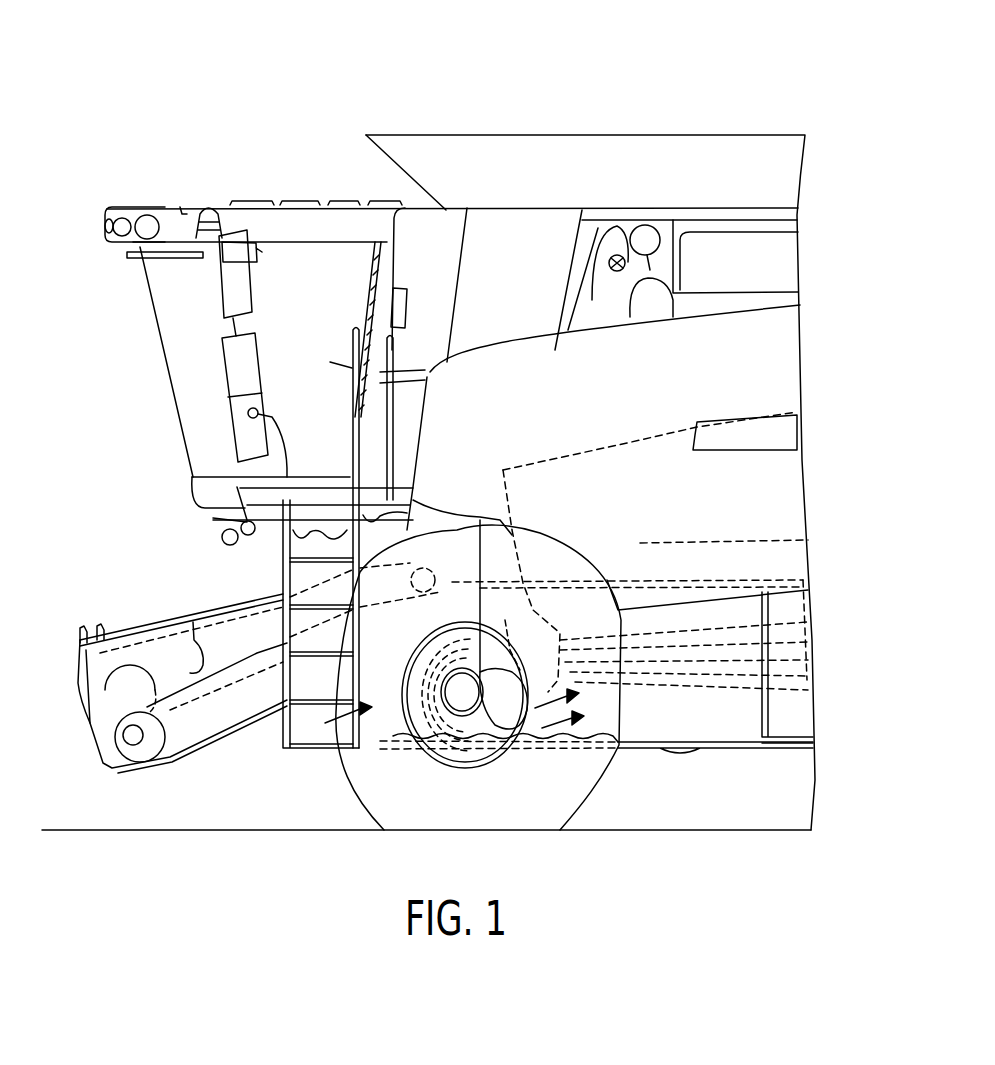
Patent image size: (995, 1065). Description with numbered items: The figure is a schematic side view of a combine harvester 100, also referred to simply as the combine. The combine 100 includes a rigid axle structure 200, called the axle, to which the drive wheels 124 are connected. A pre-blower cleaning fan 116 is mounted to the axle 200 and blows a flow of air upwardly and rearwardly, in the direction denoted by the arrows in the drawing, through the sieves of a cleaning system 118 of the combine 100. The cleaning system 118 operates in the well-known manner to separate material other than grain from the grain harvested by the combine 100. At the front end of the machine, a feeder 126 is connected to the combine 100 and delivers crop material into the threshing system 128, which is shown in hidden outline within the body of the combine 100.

The combine harvester 100 is at (747, 97).
The pre-blower cleaning fan 116 is at (532, 661).
The cleaning system 118 is at (800, 620).
The drive wheels 124 is at (597, 790).
The feeder 126 is at (137, 633).
The threshing system 128 is at (623, 447).
The rigid axle structure 200 is at (403, 740).